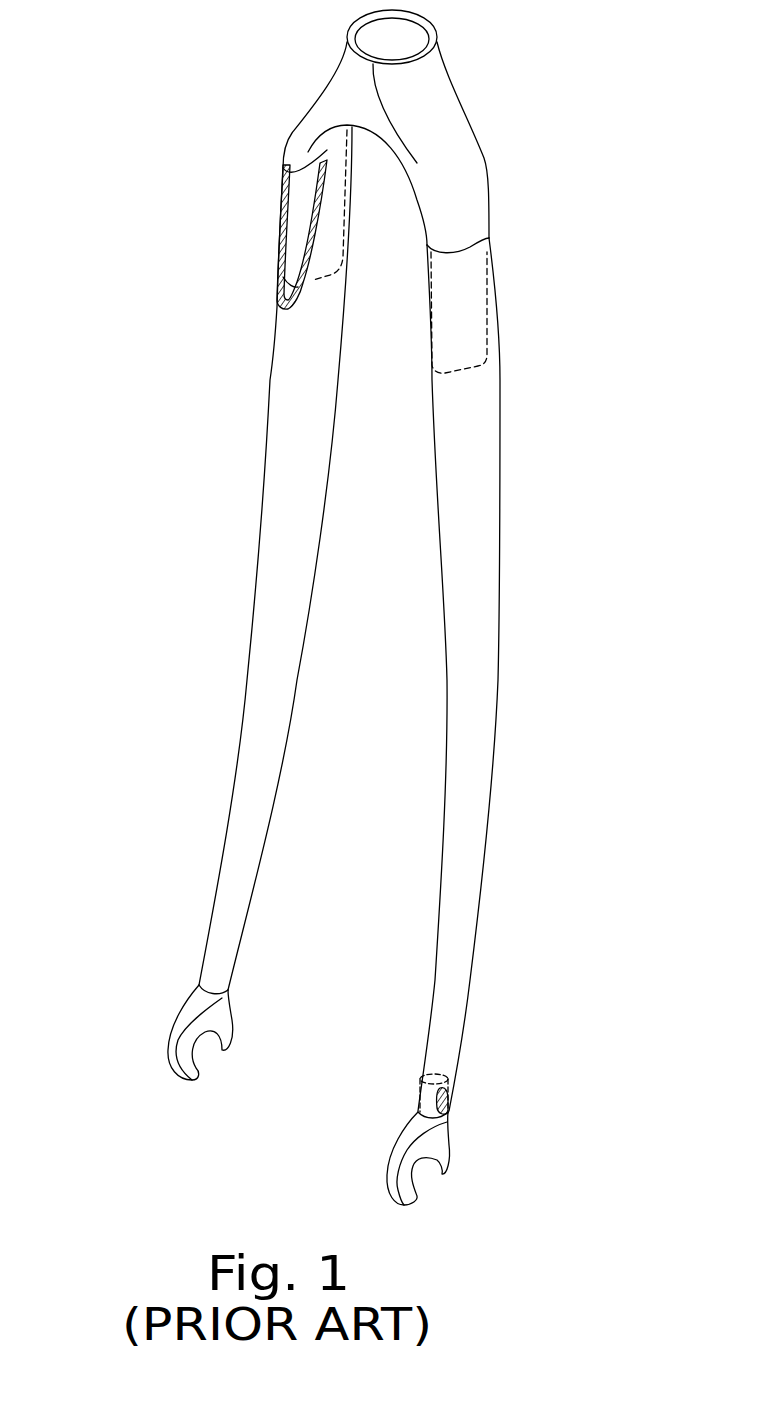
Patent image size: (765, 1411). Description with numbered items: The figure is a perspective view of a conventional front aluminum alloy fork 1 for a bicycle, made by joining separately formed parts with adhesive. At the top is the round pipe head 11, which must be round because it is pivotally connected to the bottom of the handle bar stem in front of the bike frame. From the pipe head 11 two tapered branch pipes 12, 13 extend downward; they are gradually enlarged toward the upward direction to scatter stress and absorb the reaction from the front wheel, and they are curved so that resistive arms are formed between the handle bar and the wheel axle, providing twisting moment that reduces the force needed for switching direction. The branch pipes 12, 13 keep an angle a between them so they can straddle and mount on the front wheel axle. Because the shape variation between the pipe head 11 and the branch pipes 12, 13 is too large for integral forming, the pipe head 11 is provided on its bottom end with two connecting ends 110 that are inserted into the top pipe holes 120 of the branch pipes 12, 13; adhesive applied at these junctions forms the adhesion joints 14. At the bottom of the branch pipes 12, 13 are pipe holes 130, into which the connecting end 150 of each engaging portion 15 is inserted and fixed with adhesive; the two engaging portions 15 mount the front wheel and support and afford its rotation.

The front fork 1 is at (266, 412).
The pipe head 11 is at (432, 40).
The branch pipe 12 is at (272, 528).
The branch pipe 13 is at (473, 583).
The adhesion joint 14 is at (463, 250).
The engaging portion 15 is at (185, 1025).
The connecting end 110 is at (293, 210).
The top pipe hole 120 is at (313, 238).
The pipe hole 130 is at (447, 1107).
The connecting end 150 is at (445, 1116).
The angle a is at (240, 952).